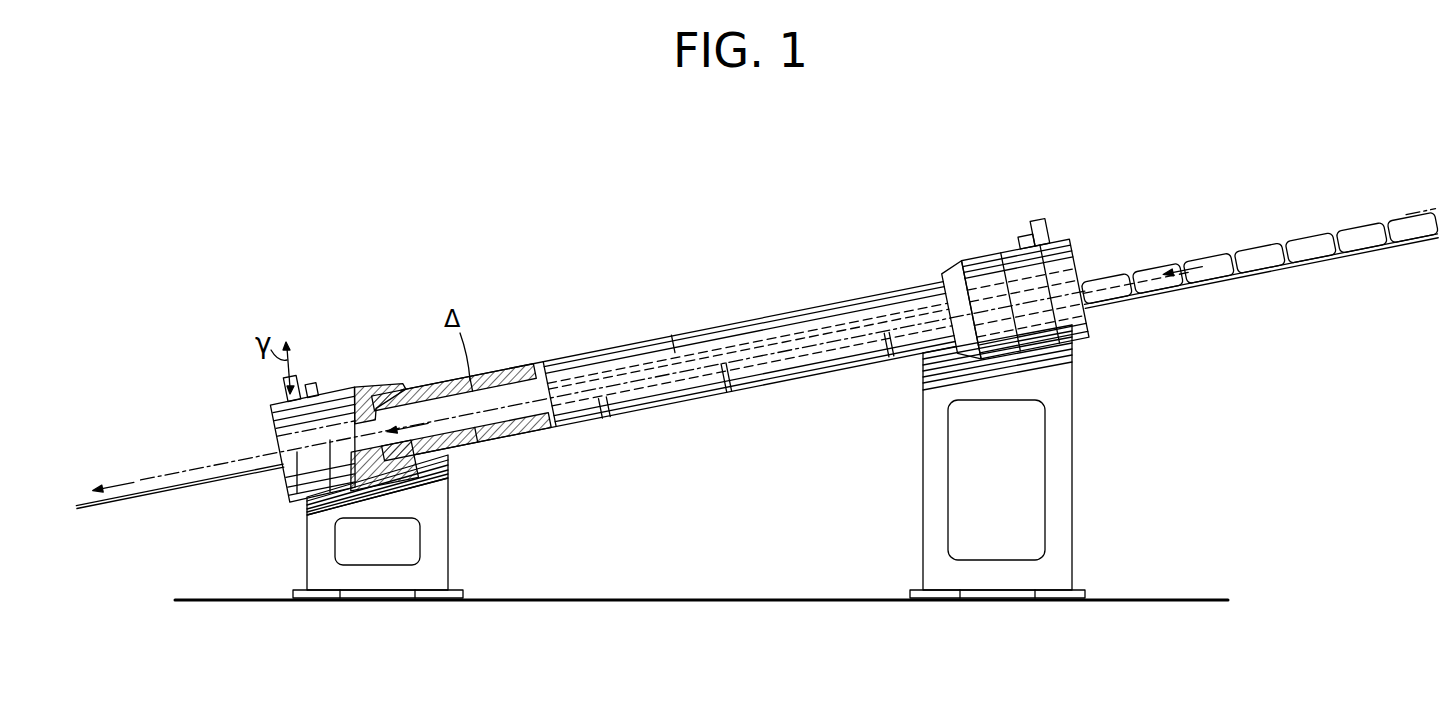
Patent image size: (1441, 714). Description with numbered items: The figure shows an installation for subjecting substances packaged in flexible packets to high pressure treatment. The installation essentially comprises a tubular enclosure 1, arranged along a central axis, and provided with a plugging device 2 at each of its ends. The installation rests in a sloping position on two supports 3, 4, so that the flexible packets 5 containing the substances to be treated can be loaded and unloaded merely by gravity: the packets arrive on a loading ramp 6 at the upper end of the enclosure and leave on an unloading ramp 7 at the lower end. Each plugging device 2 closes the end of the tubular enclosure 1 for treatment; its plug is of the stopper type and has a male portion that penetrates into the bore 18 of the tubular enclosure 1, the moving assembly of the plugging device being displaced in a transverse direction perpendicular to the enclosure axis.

The tubular enclosure 1 is at (548, 365).
The plugging device 2 is at (339, 382).
The support 3 is at (436, 540).
The support 4 is at (1063, 478).
The flexible packets 5 is at (1272, 243).
The loading ramp 6 is at (1243, 277).
The unloading ramp 7 is at (148, 493).
The bore 18 is at (502, 412).